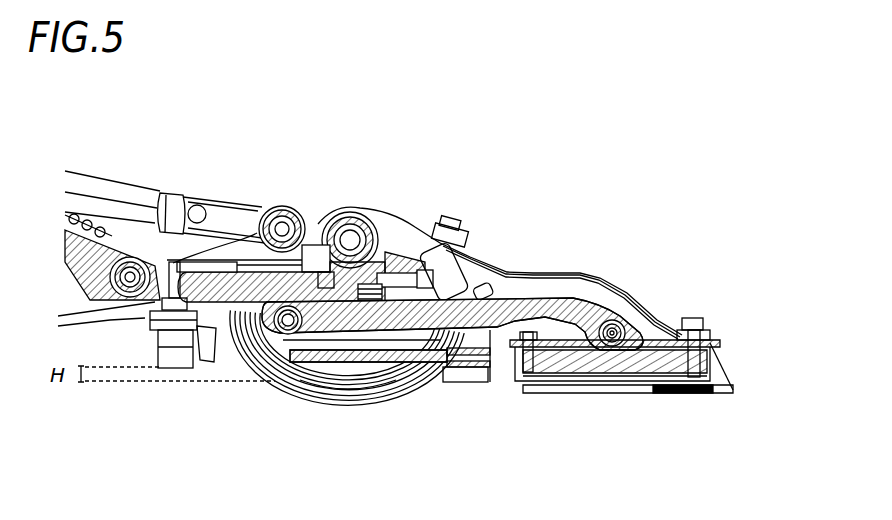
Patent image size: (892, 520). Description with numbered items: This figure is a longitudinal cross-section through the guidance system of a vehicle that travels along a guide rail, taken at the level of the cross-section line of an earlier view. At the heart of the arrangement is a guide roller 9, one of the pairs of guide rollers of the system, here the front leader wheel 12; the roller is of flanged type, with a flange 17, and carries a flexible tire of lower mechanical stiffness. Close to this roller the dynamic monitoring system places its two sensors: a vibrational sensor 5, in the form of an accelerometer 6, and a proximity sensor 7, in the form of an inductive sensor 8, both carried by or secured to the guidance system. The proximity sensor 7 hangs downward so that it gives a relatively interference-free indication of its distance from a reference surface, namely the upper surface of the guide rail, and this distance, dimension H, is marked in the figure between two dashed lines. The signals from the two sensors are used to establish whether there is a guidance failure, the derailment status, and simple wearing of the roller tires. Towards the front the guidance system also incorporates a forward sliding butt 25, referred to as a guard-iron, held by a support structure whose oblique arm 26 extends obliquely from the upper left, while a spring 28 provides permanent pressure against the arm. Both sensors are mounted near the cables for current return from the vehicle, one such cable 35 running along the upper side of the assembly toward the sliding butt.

The vibrational sensor 5 is at (372, 220).
The accelerometer 6 is at (320, 222).
The proximity sensor 7 is at (208, 372).
The inductive sensor 8 is at (200, 368).
The guide roller 9 is at (358, 401).
The leader wheel 12 is at (406, 418).
The flange 17 is at (345, 406).
The forward sliding butt 25 is at (660, 262).
The oblique arm 26 is at (134, 161).
The spring 28 is at (72, 212).
The cable 35 is at (502, 264).